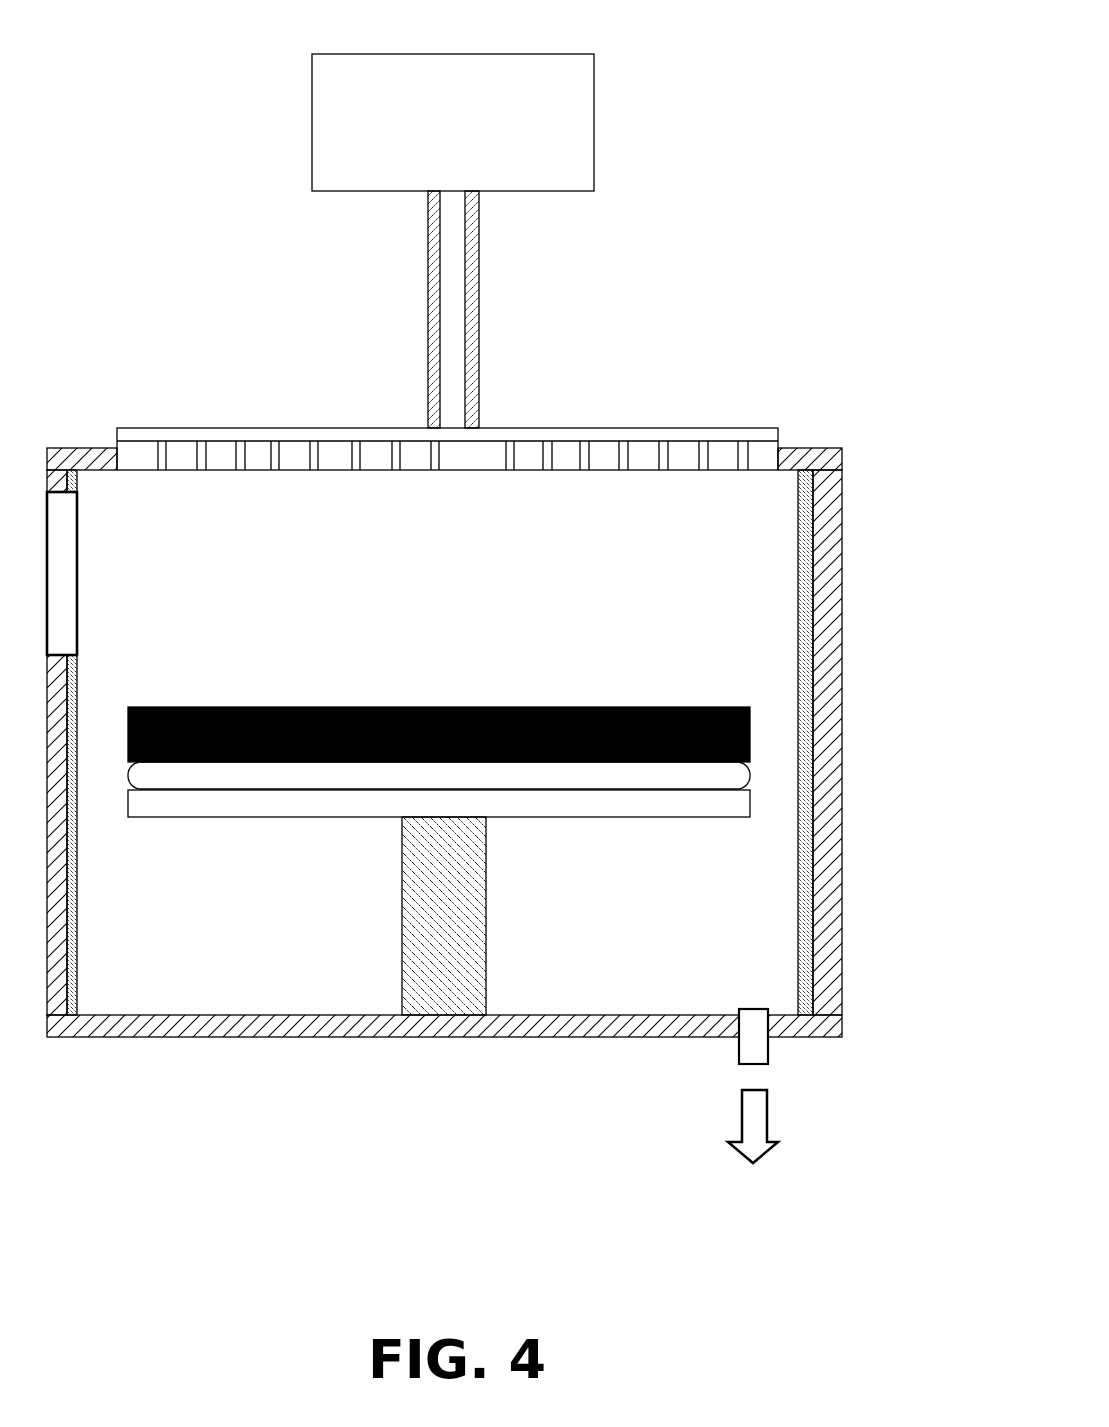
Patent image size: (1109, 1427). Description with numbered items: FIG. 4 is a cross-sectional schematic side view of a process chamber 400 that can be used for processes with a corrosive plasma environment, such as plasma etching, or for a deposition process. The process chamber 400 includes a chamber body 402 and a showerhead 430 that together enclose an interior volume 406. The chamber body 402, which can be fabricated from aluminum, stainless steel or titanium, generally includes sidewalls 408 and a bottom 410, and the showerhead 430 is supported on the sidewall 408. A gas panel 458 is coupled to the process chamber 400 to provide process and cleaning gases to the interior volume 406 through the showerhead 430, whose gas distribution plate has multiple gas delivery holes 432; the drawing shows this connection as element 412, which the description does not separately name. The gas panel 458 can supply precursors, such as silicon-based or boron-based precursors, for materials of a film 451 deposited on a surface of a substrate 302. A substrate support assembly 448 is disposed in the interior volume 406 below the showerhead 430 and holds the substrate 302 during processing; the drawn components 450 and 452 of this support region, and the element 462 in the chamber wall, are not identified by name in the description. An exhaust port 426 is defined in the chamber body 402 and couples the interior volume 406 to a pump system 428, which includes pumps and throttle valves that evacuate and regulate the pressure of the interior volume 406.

The process chamber 400 is at (825, 74).
The chamber body 402 is at (504, 783).
The interior volume 406 is at (437, 742).
The sidewalls 408 is at (842, 697).
The bottom 410 is at (163, 1037).
The gas conduit 412 is at (479, 286).
The exhaust port 426 is at (739, 1045).
The pump system 428 is at (753, 1144).
The showerhead 430 is at (447, 470).
The gas delivery holes 432 is at (712, 455).
The substrate support assembly 448 is at (322, 952).
The substrate support 450 is at (198, 817).
The film 451 is at (467, 707).
The support shaft 452 is at (486, 908).
The gas panel 458 is at (594, 123).
The slit valve opening 462 is at (77, 582).
The substrate 302 is at (750, 777).